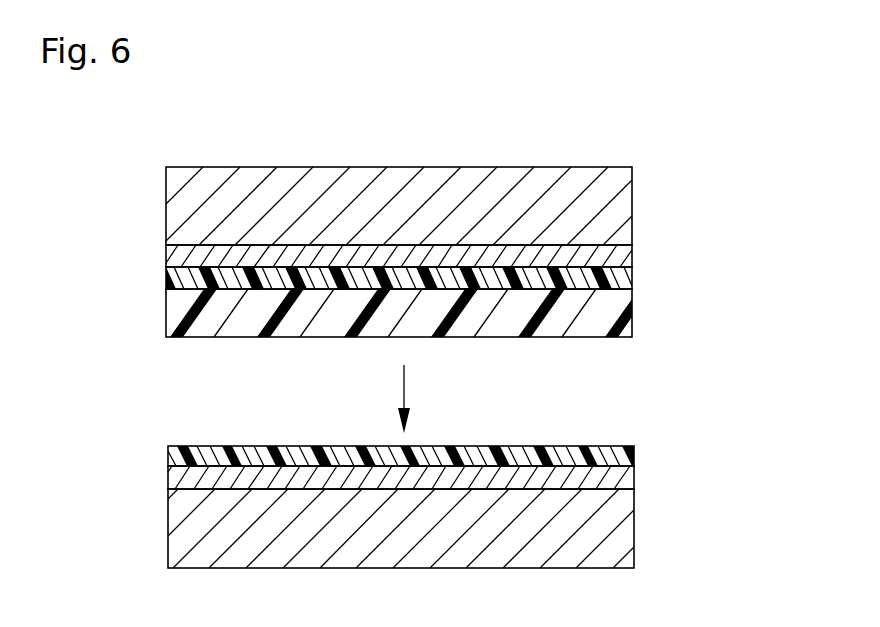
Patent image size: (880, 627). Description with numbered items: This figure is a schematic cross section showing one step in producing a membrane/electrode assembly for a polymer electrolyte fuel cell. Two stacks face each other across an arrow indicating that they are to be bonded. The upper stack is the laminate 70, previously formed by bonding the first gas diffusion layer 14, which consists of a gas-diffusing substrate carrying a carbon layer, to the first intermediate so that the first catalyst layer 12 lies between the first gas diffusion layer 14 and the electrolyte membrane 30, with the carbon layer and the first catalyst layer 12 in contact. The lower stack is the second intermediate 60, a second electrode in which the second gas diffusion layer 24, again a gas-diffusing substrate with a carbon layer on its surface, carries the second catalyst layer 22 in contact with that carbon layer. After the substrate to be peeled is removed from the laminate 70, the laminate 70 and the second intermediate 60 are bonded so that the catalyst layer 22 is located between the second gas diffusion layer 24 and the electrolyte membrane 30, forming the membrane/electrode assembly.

The first catalyst layer 12 is at (630, 279).
The first gas diffusion layer 14 is at (467, 217).
The second catalyst layer 22 is at (635, 454).
The second gas diffusion layer 24 is at (467, 517).
The electrolyte membrane 30 is at (630, 313).
The second intermediate 60 is at (467, 482).
The laminate 70 is at (467, 279).